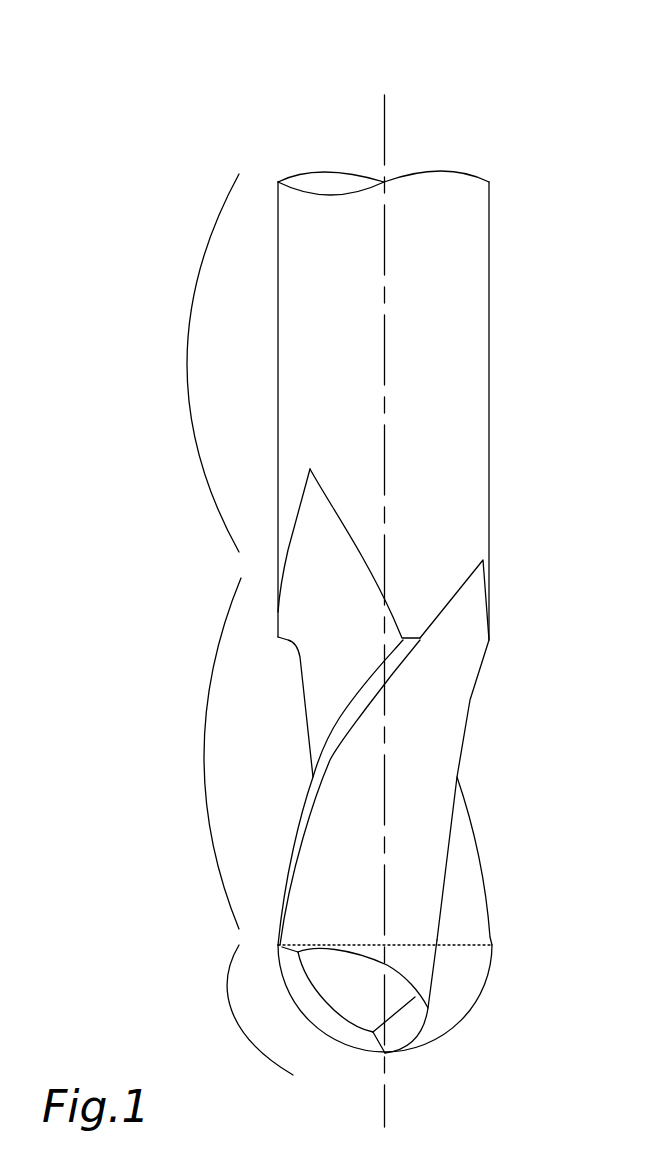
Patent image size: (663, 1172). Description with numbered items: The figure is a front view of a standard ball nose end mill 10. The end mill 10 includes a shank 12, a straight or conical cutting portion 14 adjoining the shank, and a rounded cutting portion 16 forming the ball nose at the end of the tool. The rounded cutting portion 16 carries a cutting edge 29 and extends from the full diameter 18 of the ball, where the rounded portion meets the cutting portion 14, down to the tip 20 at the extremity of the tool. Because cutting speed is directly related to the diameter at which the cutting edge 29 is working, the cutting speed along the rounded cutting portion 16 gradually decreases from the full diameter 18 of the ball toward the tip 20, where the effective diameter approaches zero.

The ball nose end mill 10 is at (540, 75).
The shank 12 is at (185, 362).
The cutting portion 14 is at (200, 757).
The rounded cutting portion 16 is at (231, 1025).
The full diameter 18 is at (493, 945).
The tip 20 is at (385, 1053).
The cutting edge 29 is at (467, 1018).